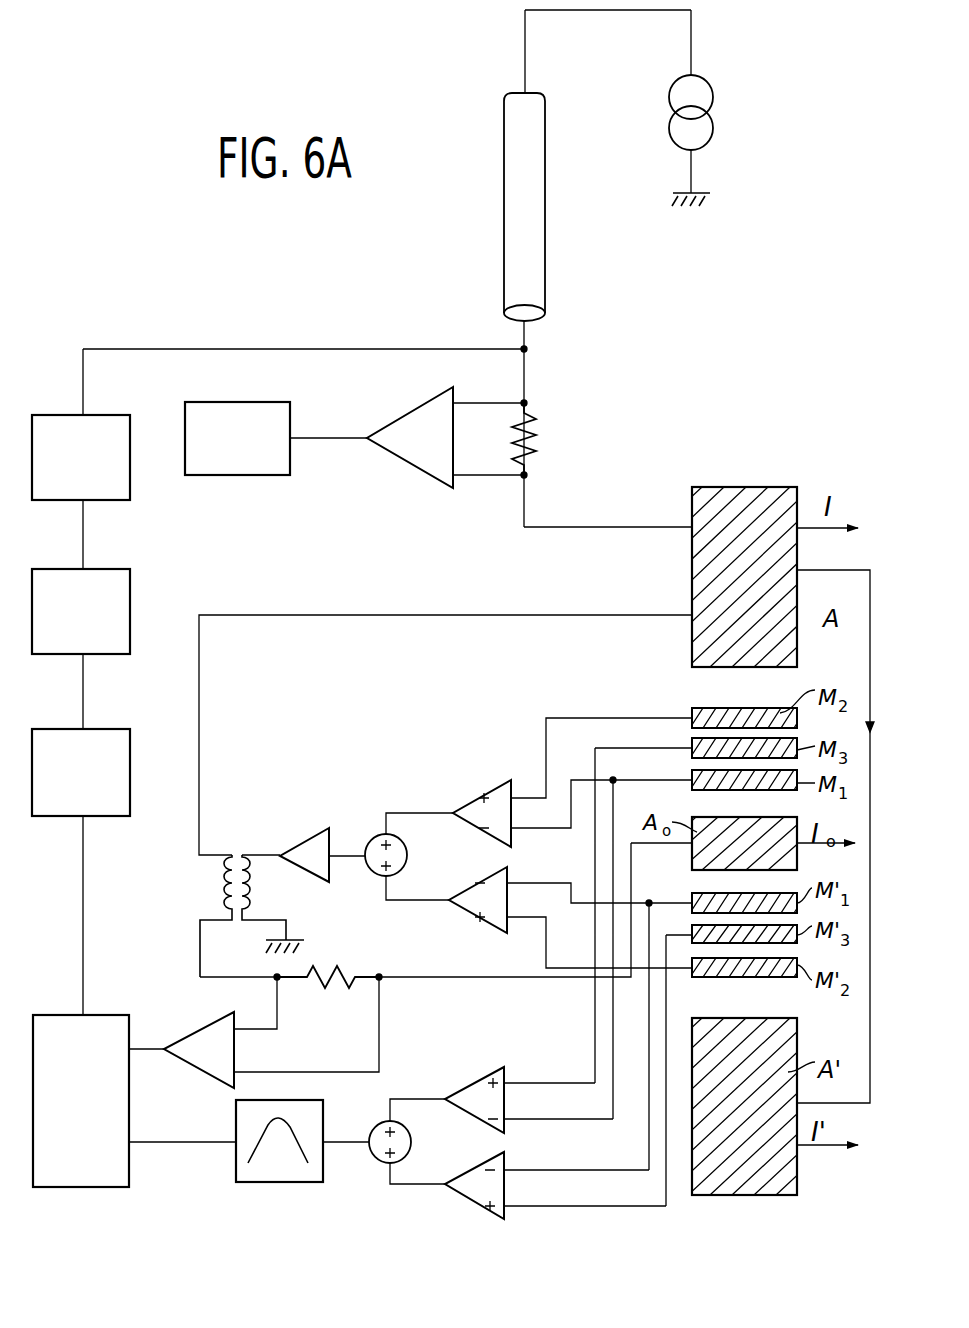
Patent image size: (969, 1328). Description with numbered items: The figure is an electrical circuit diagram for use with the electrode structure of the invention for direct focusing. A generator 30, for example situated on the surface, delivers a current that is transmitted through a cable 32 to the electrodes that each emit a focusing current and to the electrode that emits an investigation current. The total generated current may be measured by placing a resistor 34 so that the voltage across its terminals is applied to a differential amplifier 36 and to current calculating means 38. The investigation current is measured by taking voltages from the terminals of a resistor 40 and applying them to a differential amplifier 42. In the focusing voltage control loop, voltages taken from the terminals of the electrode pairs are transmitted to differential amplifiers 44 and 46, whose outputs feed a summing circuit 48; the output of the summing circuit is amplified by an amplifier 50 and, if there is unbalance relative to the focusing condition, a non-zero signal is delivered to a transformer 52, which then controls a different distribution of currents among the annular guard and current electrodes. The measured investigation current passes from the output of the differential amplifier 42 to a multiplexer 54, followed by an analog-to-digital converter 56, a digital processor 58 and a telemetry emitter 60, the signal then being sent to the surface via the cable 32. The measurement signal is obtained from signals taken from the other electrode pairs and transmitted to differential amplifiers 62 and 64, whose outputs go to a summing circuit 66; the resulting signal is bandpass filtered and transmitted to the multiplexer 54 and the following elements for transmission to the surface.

The generator 30 is at (670, 110).
The cable 32 is at (545, 268).
The resistor 34 is at (537, 440).
The differential amplifier 36 is at (428, 470).
The current calculating means 38 is at (280, 468).
The resistor 40 is at (340, 1000).
The differential amplifier 42 is at (200, 1031).
The differential amplifier 44 is at (479, 798).
The differential amplifier 46 is at (476, 920).
The summing circuit 48 is at (365, 875).
The amplifier 50 is at (300, 838).
The transformer 52 is at (212, 885).
The multiplexer 54 is at (105, 1180).
The analog-to-digital converter 56 is at (125, 795).
The digital processor 58 is at (125, 640).
The telemetry emitter 60 is at (125, 483).
The differential amplifier 62 is at (280, 1178).
The differential amplifier 64 is at (470, 1193).
The summing circuit 66 is at (372, 1160).